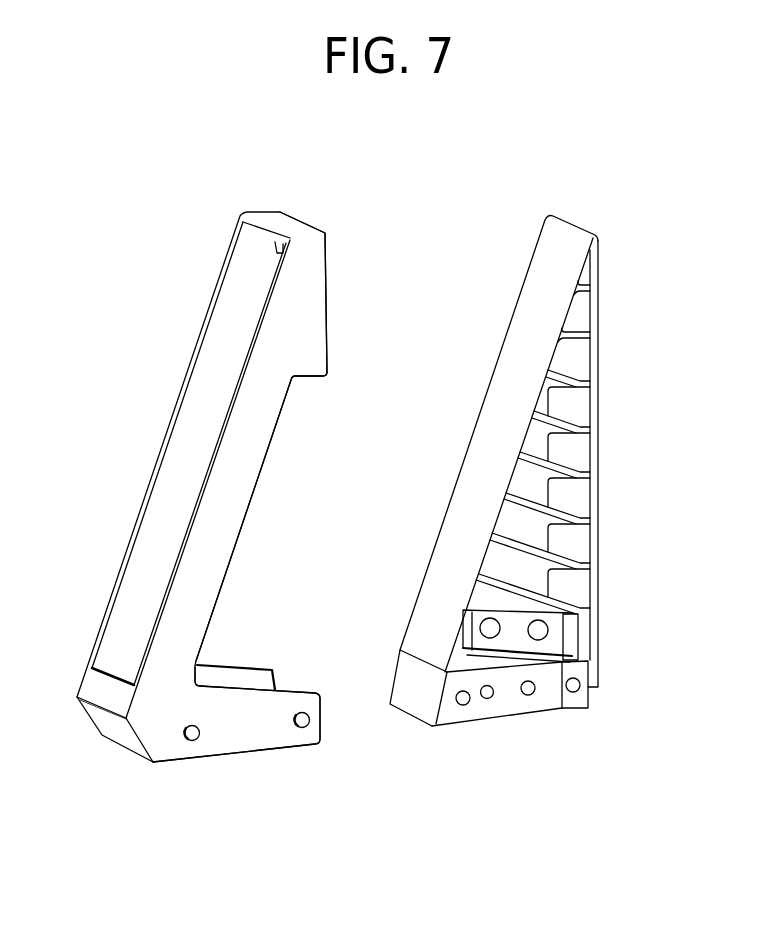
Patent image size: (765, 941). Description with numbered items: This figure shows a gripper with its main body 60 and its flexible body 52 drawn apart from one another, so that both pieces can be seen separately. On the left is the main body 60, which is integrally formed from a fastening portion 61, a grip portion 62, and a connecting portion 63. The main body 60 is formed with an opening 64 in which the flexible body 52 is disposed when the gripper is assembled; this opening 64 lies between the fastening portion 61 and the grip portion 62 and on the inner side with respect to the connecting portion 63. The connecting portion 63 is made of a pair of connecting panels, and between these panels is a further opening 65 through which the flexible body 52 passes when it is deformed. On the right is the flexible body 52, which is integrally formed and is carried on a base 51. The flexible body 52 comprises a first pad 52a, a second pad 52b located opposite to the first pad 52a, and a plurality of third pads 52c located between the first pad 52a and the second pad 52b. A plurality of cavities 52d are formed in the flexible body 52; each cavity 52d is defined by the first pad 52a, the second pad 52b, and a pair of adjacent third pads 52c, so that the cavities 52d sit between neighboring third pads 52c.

The base 51 is at (508, 703).
The flexible body 52 is at (530, 426).
The first pad 52a is at (597, 534).
The second pad 52b is at (505, 372).
The third pad 52c is at (567, 470).
The cavity 52d is at (574, 432).
The main body 60 is at (233, 509).
The fastening portion 61 is at (238, 740).
The grip portion 62 is at (318, 272).
The connecting portion 63 is at (235, 428).
The opening 64 is at (295, 500).
The opening 65 is at (169, 511).